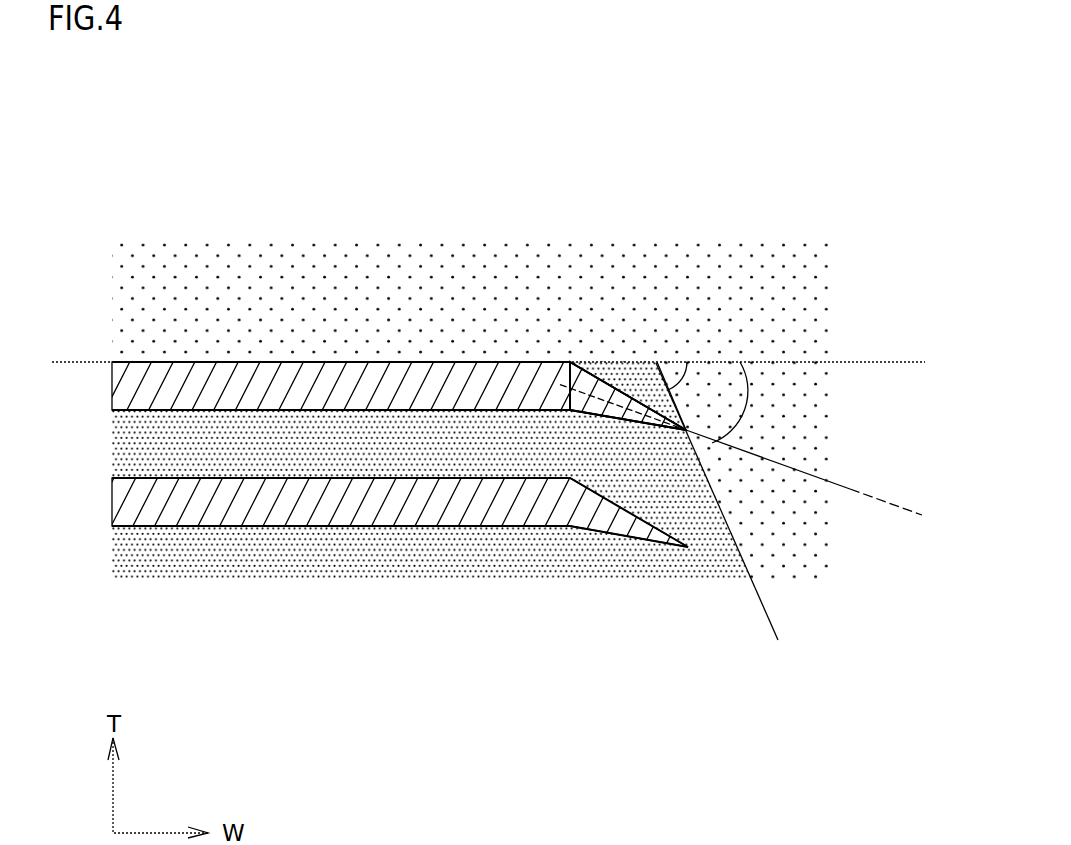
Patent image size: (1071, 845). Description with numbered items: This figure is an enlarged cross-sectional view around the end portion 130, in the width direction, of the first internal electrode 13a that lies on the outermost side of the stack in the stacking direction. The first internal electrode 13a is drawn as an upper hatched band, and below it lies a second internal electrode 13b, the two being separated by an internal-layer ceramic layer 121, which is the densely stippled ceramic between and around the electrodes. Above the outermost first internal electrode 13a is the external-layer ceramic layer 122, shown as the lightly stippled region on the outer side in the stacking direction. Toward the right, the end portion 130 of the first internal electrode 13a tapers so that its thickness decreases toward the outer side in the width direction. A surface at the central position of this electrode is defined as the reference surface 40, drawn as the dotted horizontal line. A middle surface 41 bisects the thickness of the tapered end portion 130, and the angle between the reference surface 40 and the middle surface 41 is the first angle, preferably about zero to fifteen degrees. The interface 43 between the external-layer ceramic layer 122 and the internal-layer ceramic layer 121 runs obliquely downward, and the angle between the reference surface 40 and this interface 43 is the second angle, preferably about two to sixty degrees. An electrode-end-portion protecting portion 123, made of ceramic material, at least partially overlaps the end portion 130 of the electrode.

The internal-layer ceramic layer 121 is at (200, 437).
The external-layer ceramic layer 122 is at (482, 288).
The electrode-end-portion protecting portion 123 is at (633, 380).
The first internal electrode 13a is at (293, 368).
The end portion 130 is at (613, 383).
The second internal electrode 13b is at (283, 522).
The reference surface 40 is at (843, 362).
The middle surface 41 is at (846, 487).
The interface 43 is at (780, 628).